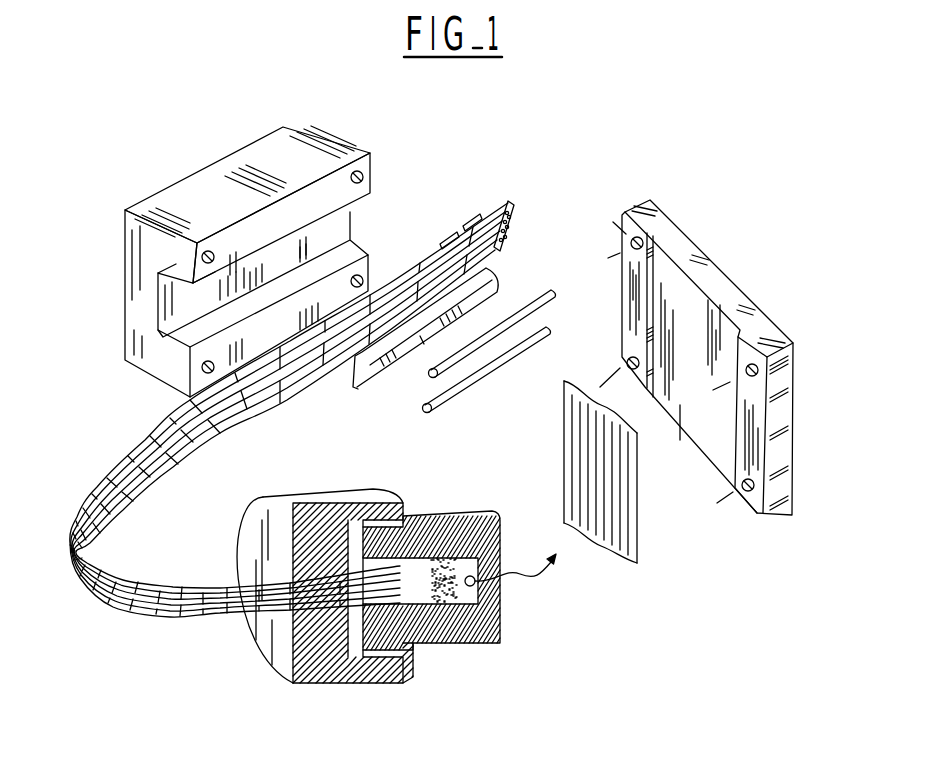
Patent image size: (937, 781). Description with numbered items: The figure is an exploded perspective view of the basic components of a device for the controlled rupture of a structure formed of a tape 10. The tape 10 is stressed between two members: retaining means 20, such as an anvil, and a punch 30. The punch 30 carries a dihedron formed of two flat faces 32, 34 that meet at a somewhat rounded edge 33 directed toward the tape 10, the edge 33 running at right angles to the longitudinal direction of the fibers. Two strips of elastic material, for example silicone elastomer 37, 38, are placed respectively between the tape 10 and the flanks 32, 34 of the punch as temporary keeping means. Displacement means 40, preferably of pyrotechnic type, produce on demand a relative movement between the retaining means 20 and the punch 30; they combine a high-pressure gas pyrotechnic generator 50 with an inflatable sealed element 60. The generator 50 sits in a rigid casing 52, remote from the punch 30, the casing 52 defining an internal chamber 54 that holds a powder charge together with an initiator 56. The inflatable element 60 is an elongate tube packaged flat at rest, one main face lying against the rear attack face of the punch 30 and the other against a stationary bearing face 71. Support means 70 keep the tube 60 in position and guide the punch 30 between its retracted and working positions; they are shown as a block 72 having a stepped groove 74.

The tape 10 is at (611, 588).
The retaining means 20 is at (743, 259).
The punch 30 is at (473, 297).
The flat face 32 is at (446, 296).
The rounded edge 33 is at (413, 367).
The flat face 34 is at (377, 383).
The strip of elastic material 37 is at (570, 366).
The strip of elastic material 38 is at (500, 370).
The displacement means 40 is at (114, 628).
The high-pressure gas pyrotechnic generator 50 is at (396, 625).
The rigid casing 52 is at (398, 677).
The internal chamber 54 is at (457, 650).
The initiator 56 is at (476, 585).
The inflatable sealed element 60 is at (70, 487).
The support means 70 is at (219, 238).
The stationary bearing face 71 is at (158, 332).
The block 72 is at (170, 165).
The groove 74 is at (183, 302).